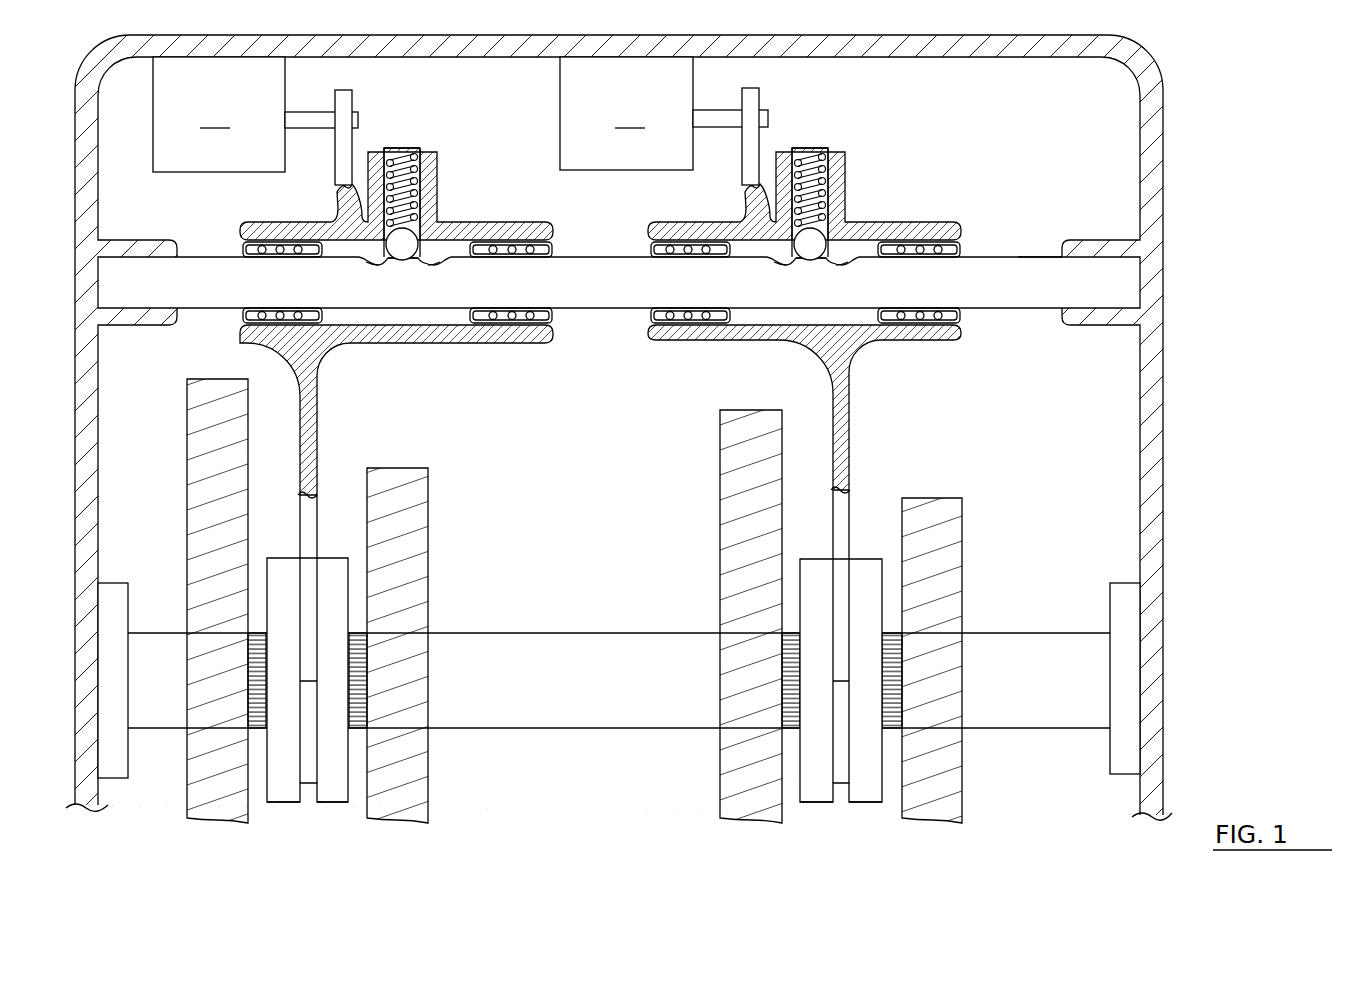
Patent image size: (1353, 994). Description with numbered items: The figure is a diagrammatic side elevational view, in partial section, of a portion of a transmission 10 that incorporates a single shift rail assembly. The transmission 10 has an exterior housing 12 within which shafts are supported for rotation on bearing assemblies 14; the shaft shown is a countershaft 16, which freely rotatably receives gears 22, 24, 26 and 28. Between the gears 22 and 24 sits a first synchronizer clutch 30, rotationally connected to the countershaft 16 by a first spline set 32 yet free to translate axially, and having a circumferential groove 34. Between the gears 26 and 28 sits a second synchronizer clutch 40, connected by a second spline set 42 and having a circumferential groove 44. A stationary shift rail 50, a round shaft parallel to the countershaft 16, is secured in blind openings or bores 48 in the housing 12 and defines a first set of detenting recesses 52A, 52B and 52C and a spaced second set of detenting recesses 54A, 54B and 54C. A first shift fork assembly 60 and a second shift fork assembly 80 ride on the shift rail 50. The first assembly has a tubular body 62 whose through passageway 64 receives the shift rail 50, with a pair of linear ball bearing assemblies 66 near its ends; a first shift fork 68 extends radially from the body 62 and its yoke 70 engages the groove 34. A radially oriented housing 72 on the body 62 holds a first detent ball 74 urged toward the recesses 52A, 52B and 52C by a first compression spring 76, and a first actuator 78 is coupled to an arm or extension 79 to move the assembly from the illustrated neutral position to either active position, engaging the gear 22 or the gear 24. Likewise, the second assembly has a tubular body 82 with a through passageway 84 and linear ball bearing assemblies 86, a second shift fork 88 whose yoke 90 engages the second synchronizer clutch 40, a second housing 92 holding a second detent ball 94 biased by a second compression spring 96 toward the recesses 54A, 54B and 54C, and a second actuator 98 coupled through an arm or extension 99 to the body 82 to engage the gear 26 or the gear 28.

The transmission 10 is at (1207, 163).
The exterior housing 12 is at (1154, 402).
The bearing assemblies 14 is at (118, 590).
The countershaft 16 is at (548, 640).
The first gear 22 is at (203, 440).
The second gear 24 is at (413, 520).
The third gear 26 is at (738, 483).
The fourth gear 28 is at (950, 550).
The first synchronizer clutch 30 is at (335, 699).
The first spline set 32 is at (353, 731).
The circumferential channel or groove 34 is at (303, 800).
The second synchronizer clutch 40 is at (815, 694).
The second spline set 42 is at (792, 732).
The circumferential channel or groove 44 is at (833, 801).
The blind openings or bores 48 is at (147, 305).
The stationary shift rail 50 is at (1018, 258).
The first detenting recess 52A is at (375, 263).
The second detenting recess 52B is at (402, 262).
The third detenting recess 52C is at (432, 263).
The first detenting recess of second set 54A is at (783, 263).
The second detenting recess of second set 54B is at (810, 262).
The third detenting recess of second set 54C is at (842, 263).
The first shift fork assembly 60 is at (379, 276).
The first cylindrical body 62 is at (530, 331).
The through passageway 64 is at (565, 238).
The first pair of linear ball bearing assemblies 66 is at (270, 247).
The first shift fork 68 is at (312, 537).
The first yoke 70 is at (308, 630).
The first radially oriented housing 72 is at (430, 183).
The first detent ball 74 is at (404, 246).
The first compression spring 76 is at (408, 155).
The first actuator 78 is at (255, 114).
The first arm or extension 79 is at (340, 163).
The second shift fork assembly 80 is at (788, 273).
The second cylindrical body 82 is at (940, 336).
The through passageway 84 is at (972, 315).
The second pair of linear ball bearing assemblies 86 is at (932, 247).
The second shift fork 88 is at (847, 535).
The second yoke 90 is at (837, 622).
The second housing 92 is at (846, 182).
The second detent ball 94 is at (812, 246).
The second compression spring 96 is at (815, 155).
The second actuator 98 is at (664, 113).
The second arm or extension 99 is at (750, 165).